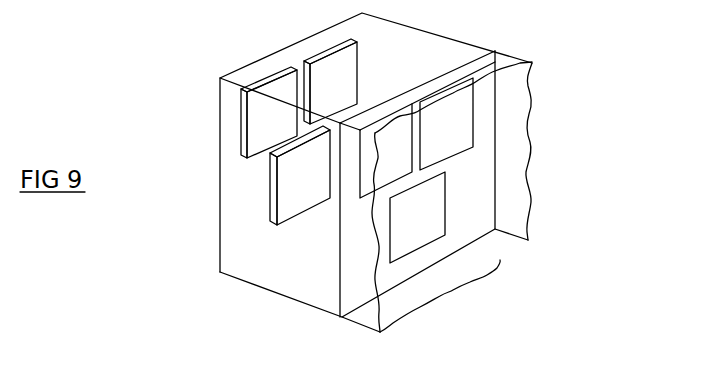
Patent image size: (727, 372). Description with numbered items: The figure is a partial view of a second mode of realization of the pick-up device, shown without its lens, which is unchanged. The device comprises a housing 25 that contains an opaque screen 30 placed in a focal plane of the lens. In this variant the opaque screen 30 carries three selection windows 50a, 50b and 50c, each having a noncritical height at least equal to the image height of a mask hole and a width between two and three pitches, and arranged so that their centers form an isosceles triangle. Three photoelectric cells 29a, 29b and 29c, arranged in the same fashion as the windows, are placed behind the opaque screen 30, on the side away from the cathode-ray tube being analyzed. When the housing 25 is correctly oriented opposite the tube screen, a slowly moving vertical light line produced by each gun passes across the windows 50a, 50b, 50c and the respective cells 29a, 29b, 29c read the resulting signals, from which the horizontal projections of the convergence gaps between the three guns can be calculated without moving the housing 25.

The housing 25 is at (252, 283).
The opaque screen 30 is at (342, 300).
The photoelectric cell 29a is at (258, 108).
The photoelectric cell 29b is at (355, 82).
The photoelectric cell 29c is at (293, 185).
The selection window 50a is at (373, 190).
The selection window 50b is at (463, 105).
The selection window 50c is at (437, 220).